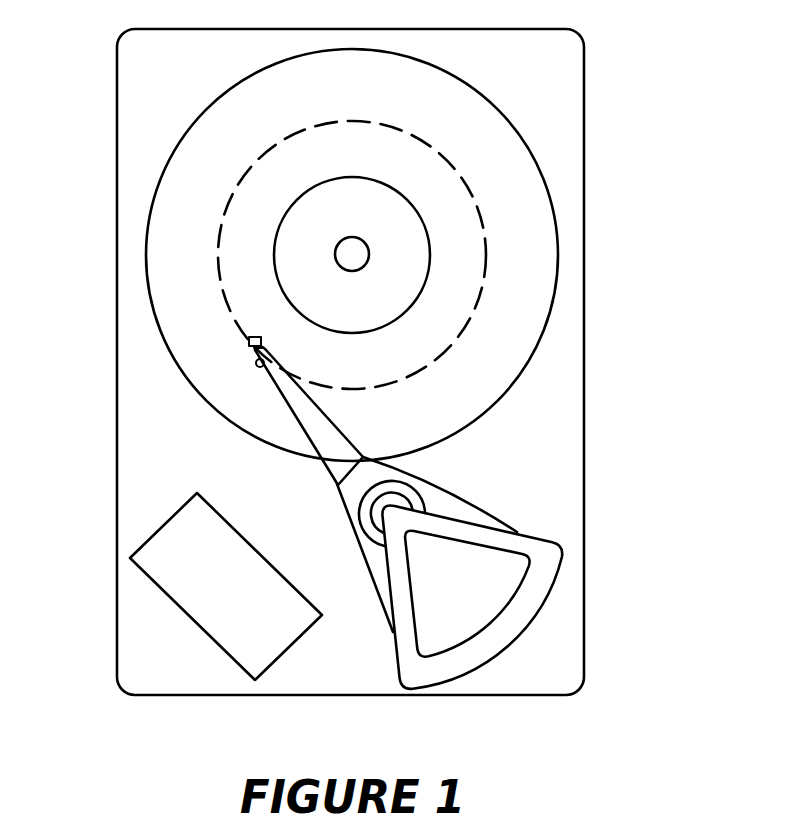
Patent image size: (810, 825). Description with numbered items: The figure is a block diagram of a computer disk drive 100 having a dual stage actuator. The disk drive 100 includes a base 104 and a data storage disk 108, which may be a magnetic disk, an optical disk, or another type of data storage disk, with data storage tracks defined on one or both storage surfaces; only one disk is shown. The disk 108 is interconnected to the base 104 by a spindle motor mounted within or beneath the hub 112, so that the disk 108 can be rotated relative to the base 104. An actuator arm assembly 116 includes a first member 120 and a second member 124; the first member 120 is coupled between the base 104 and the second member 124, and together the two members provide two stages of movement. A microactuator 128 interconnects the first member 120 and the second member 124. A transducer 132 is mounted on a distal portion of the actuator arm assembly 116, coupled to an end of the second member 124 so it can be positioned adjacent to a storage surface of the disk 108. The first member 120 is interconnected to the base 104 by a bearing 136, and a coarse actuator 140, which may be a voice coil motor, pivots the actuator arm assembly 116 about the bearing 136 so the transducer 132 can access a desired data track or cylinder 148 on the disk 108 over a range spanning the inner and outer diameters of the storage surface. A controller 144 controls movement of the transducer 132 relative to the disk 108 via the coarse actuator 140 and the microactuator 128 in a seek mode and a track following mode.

The disk drive 100 is at (626, 177).
The base 104 is at (584, 443).
The data storage disk 108 is at (520, 293).
The hub 112 is at (335, 253).
The actuator arm assembly 116 is at (285, 425).
The first member 120 is at (287, 400).
The second member 124 is at (250, 357).
The microactuator 128 is at (250, 359).
The transducer 132 is at (248, 340).
The bearing 136 is at (371, 513).
The coarse actuator 140 is at (443, 648).
The controller 144 is at (187, 592).
The data track or cylinder 148 is at (465, 327).